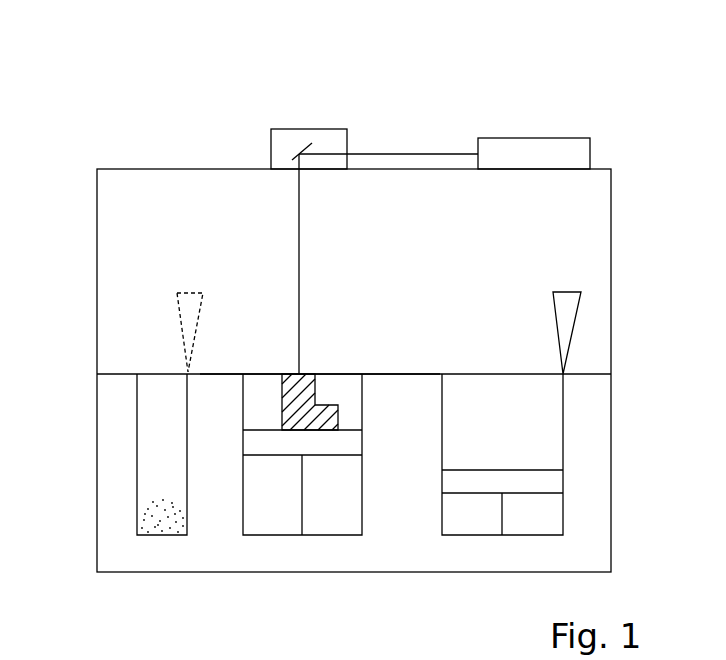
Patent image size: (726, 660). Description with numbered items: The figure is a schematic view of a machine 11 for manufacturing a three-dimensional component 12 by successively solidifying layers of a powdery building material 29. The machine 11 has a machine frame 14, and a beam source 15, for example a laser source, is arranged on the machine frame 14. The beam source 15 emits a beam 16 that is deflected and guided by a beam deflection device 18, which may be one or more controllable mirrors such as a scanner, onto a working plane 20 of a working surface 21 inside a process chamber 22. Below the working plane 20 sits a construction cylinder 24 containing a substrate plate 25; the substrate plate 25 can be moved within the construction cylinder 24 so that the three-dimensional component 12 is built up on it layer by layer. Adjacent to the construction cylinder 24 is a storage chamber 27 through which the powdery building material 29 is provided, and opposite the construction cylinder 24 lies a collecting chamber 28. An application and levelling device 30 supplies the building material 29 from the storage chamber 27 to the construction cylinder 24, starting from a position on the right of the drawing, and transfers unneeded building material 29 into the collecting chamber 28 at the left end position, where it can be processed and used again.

The machine 11 is at (430, 107).
The three-dimensional component 12 is at (310, 369).
The machine frame 14 is at (612, 496).
The beam source 15 is at (557, 155).
The beam 16 is at (298, 250).
The beam deflection device 18 is at (291, 137).
The working plane 20 is at (424, 360).
The working surface 21 is at (395, 372).
The process chamber 22 is at (186, 200).
The construction cylinder 24 is at (362, 477).
The substrate plate 25 is at (250, 443).
The storage chamber 27 is at (543, 437).
The collecting chamber 28 is at (137, 482).
The powdery building material 29 is at (158, 518).
The application and levelling device 30 is at (177, 300).